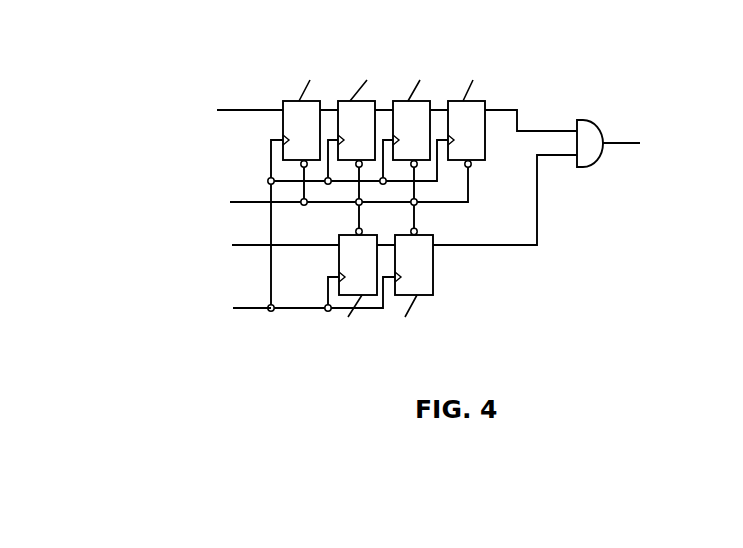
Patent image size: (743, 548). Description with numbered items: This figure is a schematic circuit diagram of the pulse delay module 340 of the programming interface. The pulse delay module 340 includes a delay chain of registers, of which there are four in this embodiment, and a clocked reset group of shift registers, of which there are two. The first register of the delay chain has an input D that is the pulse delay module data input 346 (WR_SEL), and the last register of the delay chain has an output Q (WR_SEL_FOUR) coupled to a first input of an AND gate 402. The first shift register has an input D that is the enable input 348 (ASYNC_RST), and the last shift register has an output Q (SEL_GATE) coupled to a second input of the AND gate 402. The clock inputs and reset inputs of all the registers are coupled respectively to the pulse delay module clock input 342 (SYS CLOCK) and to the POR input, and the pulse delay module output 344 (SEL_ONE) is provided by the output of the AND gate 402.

The pulse delay module 340 is at (404, 202).
The pulse delay module clock input 342 is at (253, 310).
The pulse delay module output 344 is at (610, 144).
The pulse delay module data input 346 is at (272, 110).
The enable input 348 is at (241, 247).
The AND gate 402 is at (583, 167).